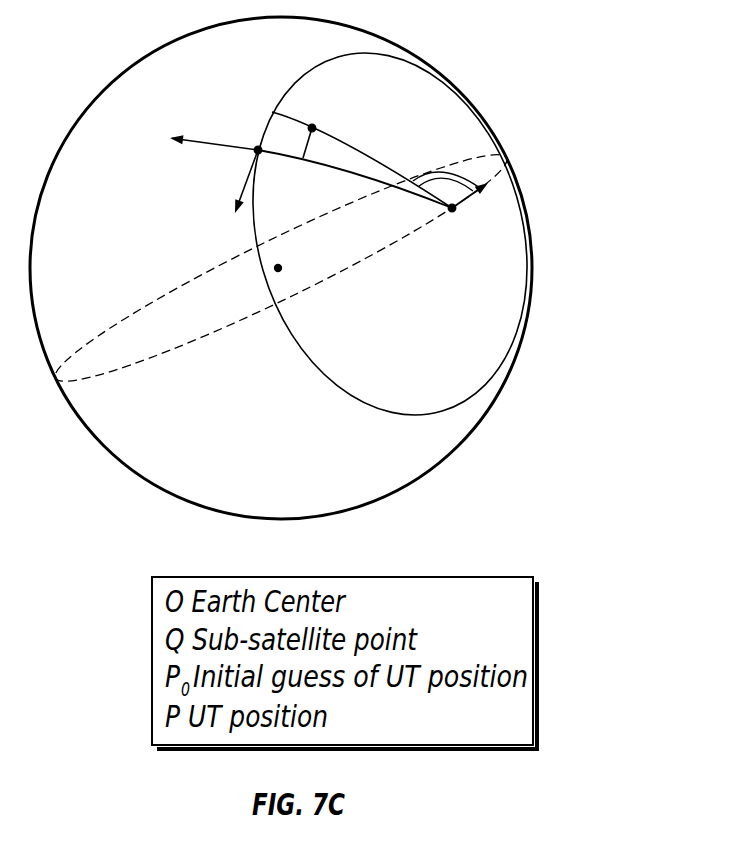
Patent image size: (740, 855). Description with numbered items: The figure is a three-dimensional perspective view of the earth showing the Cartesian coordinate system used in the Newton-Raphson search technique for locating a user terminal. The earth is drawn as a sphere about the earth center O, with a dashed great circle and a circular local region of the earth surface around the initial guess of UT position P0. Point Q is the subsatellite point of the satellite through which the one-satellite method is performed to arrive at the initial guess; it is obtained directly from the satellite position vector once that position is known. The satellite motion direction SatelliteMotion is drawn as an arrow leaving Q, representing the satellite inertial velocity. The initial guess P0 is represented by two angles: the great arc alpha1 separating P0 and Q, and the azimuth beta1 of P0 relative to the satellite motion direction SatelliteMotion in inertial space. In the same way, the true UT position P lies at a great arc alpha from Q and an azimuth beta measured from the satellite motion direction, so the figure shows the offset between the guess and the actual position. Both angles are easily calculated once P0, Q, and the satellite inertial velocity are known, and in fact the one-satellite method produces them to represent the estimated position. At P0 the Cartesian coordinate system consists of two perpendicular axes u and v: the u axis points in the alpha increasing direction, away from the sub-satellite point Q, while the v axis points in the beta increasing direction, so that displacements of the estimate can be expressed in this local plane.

The earth center O is at (289, 268).
The subsatellite point Q is at (456, 224).
The initial guess of UT position P0 is at (247, 131).
The UT position P is at (311, 125).
The u axis u is at (204, 135).
The v axis v is at (242, 195).
The great arc angle alpha is at (362, 160).
The great arc angle of initial guess alpha1 is at (355, 179).
The azimuth angle beta is at (454, 197).
The azimuth angle of initial guess beta1 is at (434, 201).
The satellite motion direction SatelliteMotion is at (503, 191).